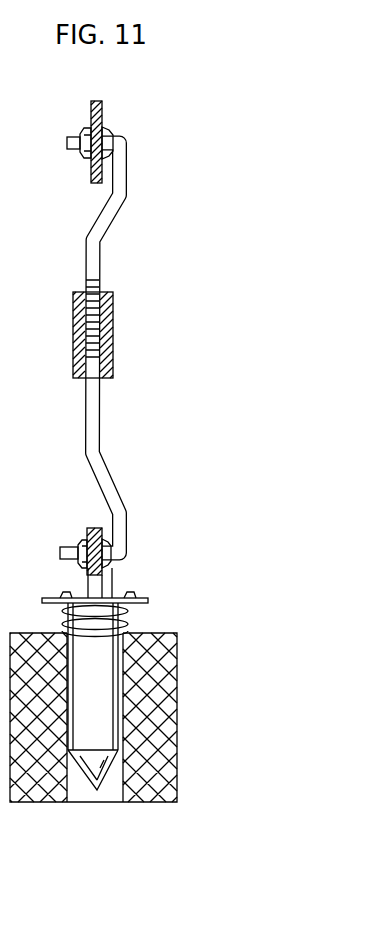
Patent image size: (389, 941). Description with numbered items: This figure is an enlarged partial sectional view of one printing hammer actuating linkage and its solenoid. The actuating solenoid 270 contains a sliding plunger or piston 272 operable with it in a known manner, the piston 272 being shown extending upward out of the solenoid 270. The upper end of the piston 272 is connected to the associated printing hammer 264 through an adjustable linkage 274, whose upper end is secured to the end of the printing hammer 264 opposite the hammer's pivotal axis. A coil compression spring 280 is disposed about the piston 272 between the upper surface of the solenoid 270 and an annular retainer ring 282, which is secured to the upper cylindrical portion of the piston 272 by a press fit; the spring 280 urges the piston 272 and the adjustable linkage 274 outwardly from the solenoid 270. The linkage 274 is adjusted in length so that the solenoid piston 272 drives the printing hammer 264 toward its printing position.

The printing hammer 264 is at (103, 112).
The adjustable linkage 274 is at (120, 212).
The annular retainer ring 282 is at (143, 600).
The coil compression spring 280 is at (130, 621).
The actuating solenoid 270 is at (165, 701).
The piston 272 is at (95, 735).